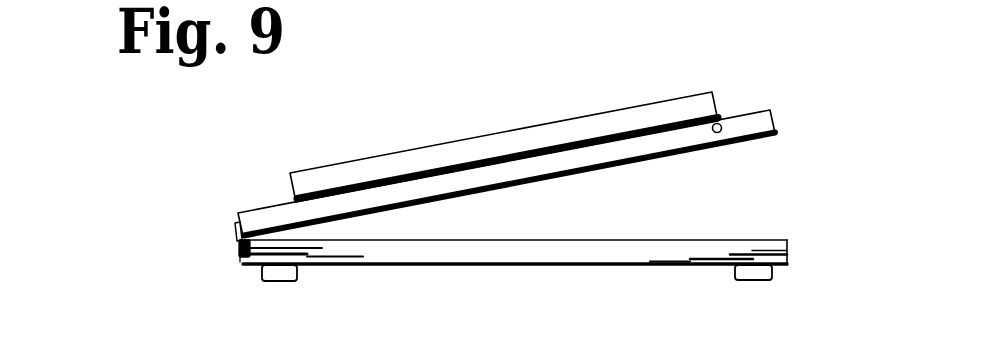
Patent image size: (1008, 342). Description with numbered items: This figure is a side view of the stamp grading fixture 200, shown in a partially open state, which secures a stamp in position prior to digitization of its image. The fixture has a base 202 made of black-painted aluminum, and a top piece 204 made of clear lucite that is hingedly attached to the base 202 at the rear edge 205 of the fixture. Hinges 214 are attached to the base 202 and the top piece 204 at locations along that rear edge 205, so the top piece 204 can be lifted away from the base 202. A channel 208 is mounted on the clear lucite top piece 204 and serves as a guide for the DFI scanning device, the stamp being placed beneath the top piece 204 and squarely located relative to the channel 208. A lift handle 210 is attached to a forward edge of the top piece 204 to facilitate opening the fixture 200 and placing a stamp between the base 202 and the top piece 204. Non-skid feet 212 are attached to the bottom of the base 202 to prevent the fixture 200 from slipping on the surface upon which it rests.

The stamp grading fixture 200 is at (476, 65).
The base 202 is at (518, 266).
The top piece 204 is at (741, 114).
The rear edge 205 is at (239, 253).
The channel 208 is at (453, 139).
The lift handle 210 is at (717, 133).
The non-skid feet 212 is at (282, 270).
The hinges 214 is at (238, 243).